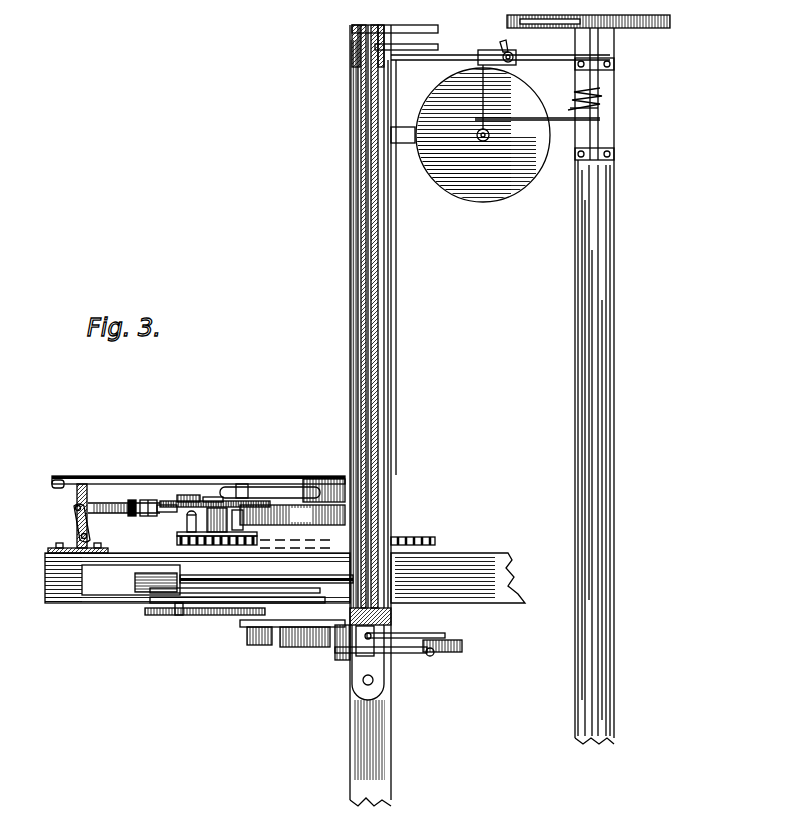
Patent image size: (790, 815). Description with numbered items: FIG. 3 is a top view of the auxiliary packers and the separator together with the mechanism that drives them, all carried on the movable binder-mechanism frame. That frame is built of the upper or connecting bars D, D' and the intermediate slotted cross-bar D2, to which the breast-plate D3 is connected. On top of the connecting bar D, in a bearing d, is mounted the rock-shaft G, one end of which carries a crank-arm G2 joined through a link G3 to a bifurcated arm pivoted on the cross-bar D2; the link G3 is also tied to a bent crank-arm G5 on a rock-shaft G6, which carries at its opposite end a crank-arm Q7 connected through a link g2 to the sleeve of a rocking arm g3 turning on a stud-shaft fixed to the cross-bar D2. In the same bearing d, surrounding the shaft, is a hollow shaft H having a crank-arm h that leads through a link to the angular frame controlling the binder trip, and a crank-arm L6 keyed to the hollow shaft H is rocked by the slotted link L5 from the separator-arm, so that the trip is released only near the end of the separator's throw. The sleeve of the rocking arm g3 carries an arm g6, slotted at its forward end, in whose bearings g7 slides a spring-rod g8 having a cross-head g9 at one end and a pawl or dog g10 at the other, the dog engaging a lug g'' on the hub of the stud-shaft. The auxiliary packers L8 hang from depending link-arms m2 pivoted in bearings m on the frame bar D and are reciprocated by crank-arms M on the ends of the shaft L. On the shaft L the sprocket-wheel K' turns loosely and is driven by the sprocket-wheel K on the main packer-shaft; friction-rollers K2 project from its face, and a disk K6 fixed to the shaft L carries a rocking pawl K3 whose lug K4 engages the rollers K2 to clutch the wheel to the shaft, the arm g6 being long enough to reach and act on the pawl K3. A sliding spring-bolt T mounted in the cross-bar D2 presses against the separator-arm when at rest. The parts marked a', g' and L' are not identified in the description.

The upper or connecting bar D is at (368, 415).
The upper or connecting bar D' is at (588, 379).
The intermediate slotted cross-bar D2 is at (458, 578).
The breast-plate D3 is at (46, 578).
The hollow shaft H is at (362, 316).
The rock-shaft G is at (368, 350).
The crank arm G2 is at (420, 632).
The link G3 is at (462, 646).
The bent crank-arm G5 is at (415, 653).
The rock-shaft G6 is at (335, 620).
The bearing d is at (352, 60).
The bar a' is at (394, 315).
The crank-arm h is at (412, 47).
The pin g' is at (166, 470).
The link g2 is at (236, 510).
The rocking arm g3 is at (52, 484).
The arm g6 is at (108, 502).
The bearings g7 is at (88, 476).
The spring-rod g8 is at (134, 500).
The cross-head g9 is at (147, 500).
The pawl or dog g10 is at (76, 528).
The lug or projection g'' is at (81, 538).
The sprocket-wheel K is at (418, 530).
The sprocket-wheel K' is at (238, 542).
The friction-rollers K2 is at (185, 520).
The rocking pawl K3 is at (180, 495).
The outwardly-projecting lug K4 is at (240, 487).
The wheel or disk K6 is at (210, 497).
The shaft L is at (235, 618).
The bar L' is at (237, 609).
The link L5 is at (250, 584).
The crank-arm L6 is at (160, 616).
The auxiliary packers L8 is at (290, 487).
The crank-arm M is at (178, 616).
The bearings m is at (282, 651).
The depending link-arms m2 is at (262, 505).
The crank-arm Q7 is at (324, 479).
The sliding spring-bolt T is at (134, 585).